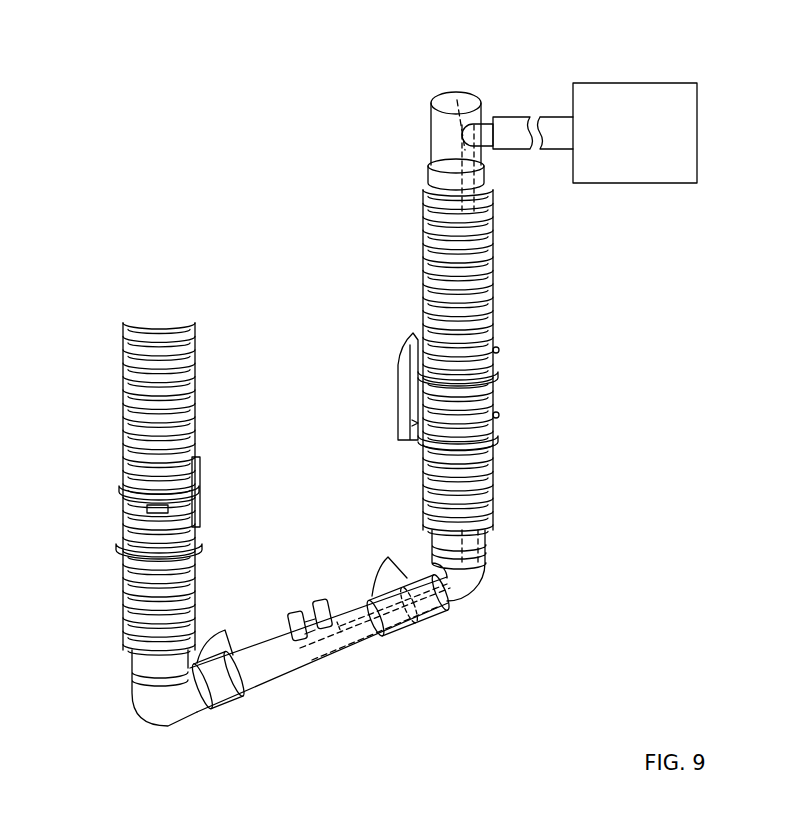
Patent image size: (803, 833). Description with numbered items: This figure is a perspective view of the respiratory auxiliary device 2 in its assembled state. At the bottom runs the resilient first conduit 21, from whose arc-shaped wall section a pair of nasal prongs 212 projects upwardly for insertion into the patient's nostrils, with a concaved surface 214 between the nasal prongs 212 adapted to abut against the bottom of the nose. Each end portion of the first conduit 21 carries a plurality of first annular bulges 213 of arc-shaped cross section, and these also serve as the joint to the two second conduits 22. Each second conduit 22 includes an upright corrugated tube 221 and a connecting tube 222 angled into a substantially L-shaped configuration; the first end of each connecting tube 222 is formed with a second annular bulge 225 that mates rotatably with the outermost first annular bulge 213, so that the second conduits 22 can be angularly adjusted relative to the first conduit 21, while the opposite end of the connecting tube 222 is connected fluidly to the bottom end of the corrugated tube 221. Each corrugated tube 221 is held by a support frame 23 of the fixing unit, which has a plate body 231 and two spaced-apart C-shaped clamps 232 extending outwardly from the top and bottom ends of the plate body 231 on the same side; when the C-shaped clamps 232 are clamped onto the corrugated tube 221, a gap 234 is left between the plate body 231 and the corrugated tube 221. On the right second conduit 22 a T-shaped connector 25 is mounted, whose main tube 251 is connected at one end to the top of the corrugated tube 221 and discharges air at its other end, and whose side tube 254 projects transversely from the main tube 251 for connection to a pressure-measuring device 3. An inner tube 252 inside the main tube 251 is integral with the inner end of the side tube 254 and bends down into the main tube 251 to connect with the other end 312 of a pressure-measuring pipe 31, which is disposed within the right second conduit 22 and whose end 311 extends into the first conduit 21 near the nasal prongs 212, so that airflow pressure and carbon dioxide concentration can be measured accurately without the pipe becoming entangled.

The respiratory auxiliary device 2 is at (337, 653).
The first conduit 21 is at (331, 645).
The nasal prongs 212 is at (296, 610).
The first annular bulges 213 is at (302, 598).
The concaved surface 214 is at (322, 662).
The second conduits 22 is at (259, 422).
The corrugated tube 221 is at (446, 270).
The connecting tube 222 is at (482, 580).
The second annular bulge 225 is at (446, 612).
The support frames 23 is at (339, 438).
The plate body 231 is at (398, 395).
The C-shaped clamps 232 is at (486, 376).
The gap 234 is at (411, 423).
The T-shaped connector 25 is at (457, 123).
The main tube 251 is at (432, 125).
The inner tube 252 is at (486, 172).
The side tube 254 is at (486, 128).
The pressure-measuring device 3 is at (618, 184).
The pressure-measuring pipe 31 is at (448, 196).
The end of the pressure-measuring pipe 311 is at (370, 643).
The other end of the pressure-measuring pipe 312 is at (457, 100).